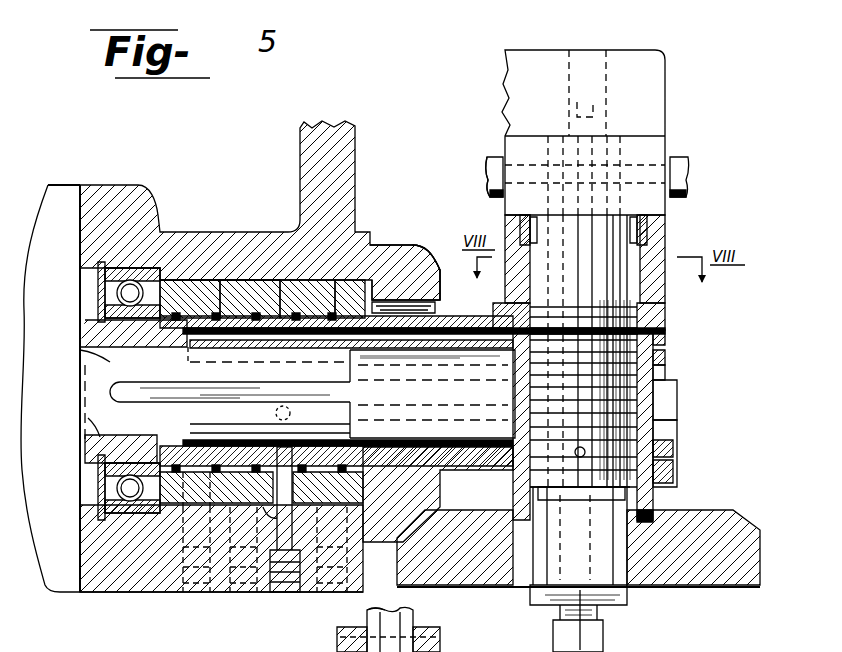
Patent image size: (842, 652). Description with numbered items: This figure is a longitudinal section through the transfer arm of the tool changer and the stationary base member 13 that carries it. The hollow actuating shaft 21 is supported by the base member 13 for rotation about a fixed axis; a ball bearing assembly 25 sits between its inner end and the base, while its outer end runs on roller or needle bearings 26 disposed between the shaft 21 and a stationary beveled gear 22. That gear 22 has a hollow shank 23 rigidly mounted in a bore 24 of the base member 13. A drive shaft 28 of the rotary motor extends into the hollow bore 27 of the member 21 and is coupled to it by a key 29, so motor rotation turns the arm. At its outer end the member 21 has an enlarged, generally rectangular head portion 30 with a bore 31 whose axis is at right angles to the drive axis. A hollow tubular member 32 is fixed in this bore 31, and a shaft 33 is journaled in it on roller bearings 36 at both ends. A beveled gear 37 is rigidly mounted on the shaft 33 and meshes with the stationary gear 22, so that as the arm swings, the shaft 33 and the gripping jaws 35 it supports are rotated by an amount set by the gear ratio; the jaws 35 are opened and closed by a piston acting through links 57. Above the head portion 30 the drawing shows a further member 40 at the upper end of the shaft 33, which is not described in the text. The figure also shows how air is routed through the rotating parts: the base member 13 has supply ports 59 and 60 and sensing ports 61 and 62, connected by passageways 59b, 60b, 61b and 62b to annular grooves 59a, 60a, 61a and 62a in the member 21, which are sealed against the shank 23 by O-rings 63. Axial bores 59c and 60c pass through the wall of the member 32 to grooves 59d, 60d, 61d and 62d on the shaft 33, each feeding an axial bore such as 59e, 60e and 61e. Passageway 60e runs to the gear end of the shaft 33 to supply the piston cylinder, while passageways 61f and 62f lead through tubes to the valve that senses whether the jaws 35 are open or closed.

The base member 13 is at (312, 196).
The hollow actuating shaft 21 is at (466, 322).
The beveled gear 22 is at (428, 282).
The hollow shank 23 is at (172, 282).
The bore 24 is at (240, 283).
The ball bearing assembly 25 is at (128, 265).
The roller or needle bearings 26 is at (396, 300).
The hollow bore 27 is at (80, 352).
The drive shaft 28 is at (98, 420).
The key 29 is at (148, 390).
The enlarged head portion 30 is at (673, 480).
The bore 31 is at (662, 476).
The hollow tubular member 32 is at (665, 362).
The shaft 33 is at (656, 290).
The gripping jaws 35 is at (424, 628).
The roller bearings 36 is at (650, 228).
The beveled gear 37 is at (727, 593).
The valve head 40 is at (688, 191).
The links 57 is at (418, 620).
The fluid supply port 59 is at (228, 592).
The annular groove 59a is at (250, 299).
The passageway 59b is at (240, 593).
The axially extending bore 59c is at (410, 334).
The groove 59d is at (660, 338).
The axially extending bore 59e is at (603, 148).
The fluid supply port 60 is at (330, 593).
The annular groove 60a is at (352, 299).
The passageway 60b is at (403, 494).
The axially extending bore 60c is at (443, 452).
The groove 60d is at (674, 450).
The axially extending bore 60e is at (630, 555).
The port 61 is at (186, 592).
The annular groove 61a is at (190, 299).
The passageway 61b is at (190, 530).
The groove 61d is at (670, 379).
The passageway 61e is at (500, 195).
The passageway 61f is at (527, 163).
The port 62 is at (283, 593).
The annular groove 62a is at (307, 299).
The passageway 62b is at (283, 515).
The groove 62d is at (656, 414).
The passageway 62f is at (640, 178).
The O-rings 63 is at (205, 450).